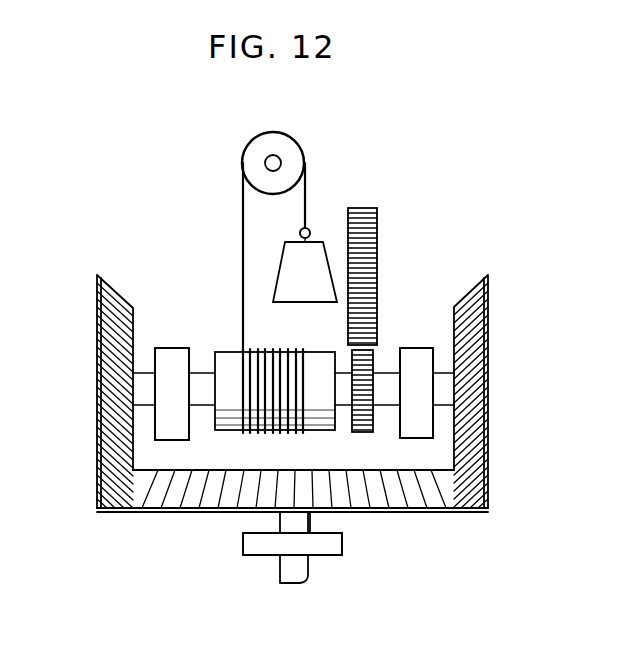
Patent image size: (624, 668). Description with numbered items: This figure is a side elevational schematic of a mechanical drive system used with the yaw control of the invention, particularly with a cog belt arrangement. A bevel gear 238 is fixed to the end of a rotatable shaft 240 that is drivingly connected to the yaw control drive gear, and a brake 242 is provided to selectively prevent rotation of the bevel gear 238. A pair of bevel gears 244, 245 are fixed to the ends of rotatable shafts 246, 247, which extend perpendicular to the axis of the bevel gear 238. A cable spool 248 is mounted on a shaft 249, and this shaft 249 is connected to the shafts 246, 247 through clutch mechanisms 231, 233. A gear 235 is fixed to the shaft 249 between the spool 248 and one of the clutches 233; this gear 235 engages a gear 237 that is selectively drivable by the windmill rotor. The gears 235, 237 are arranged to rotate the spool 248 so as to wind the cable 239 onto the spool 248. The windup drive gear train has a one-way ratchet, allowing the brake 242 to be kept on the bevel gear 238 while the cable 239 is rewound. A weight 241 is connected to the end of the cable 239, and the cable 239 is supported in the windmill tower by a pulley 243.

The clutch mechanism 231 is at (177, 417).
The clutch mechanism 233 is at (425, 427).
The gear 235 is at (372, 365).
The gear 237 is at (368, 252).
The bevel gear 238 is at (436, 485).
The cable 239 is at (247, 212).
The rotatable shaft 240 is at (283, 520).
The weight 241 is at (310, 262).
The brake 242 is at (326, 548).
The pulley 243 is at (317, 110).
The bevel gear 244 is at (115, 302).
The bevel gear 245 is at (473, 323).
The rotatable shaft 246 is at (142, 387).
The rotatable shaft 247 is at (447, 395).
The cable spool 248 is at (232, 362).
The shaft 249 is at (343, 388).